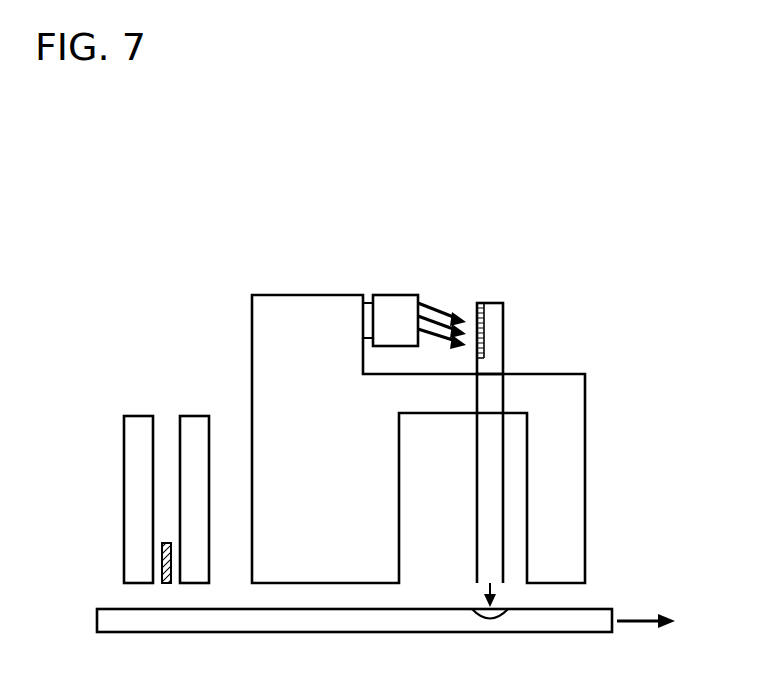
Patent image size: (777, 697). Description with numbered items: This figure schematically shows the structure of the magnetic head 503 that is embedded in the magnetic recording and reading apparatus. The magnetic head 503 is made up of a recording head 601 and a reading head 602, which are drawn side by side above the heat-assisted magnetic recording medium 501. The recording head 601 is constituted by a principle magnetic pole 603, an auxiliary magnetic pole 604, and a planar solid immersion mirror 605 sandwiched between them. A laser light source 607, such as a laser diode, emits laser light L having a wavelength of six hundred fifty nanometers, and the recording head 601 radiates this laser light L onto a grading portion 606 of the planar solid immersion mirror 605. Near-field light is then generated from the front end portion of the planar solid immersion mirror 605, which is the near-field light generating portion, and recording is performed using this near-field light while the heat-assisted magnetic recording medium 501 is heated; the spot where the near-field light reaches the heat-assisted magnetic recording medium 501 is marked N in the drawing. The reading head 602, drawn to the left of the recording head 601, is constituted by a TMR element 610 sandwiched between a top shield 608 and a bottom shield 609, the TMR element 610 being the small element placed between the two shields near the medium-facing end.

The magnetic head 503 is at (302, 205).
The recording head 601 is at (587, 228).
The reading head 602 is at (223, 332).
The principle magnetic pole 603 is at (580, 478).
The auxiliary magnetic pole 604 is at (396, 497).
The planar solid immersion mirror 605 is at (497, 338).
The grading portion 606 is at (481, 303).
The laser light source 607 is at (397, 301).
The top shield 608 is at (143, 416).
The bottom shield 609 is at (200, 416).
The TMR element 610 is at (167, 556).
The heat-assisted magnetic recording medium 501 is at (586, 614).
The laser light L is at (429, 338).
The droplet N is at (486, 587).